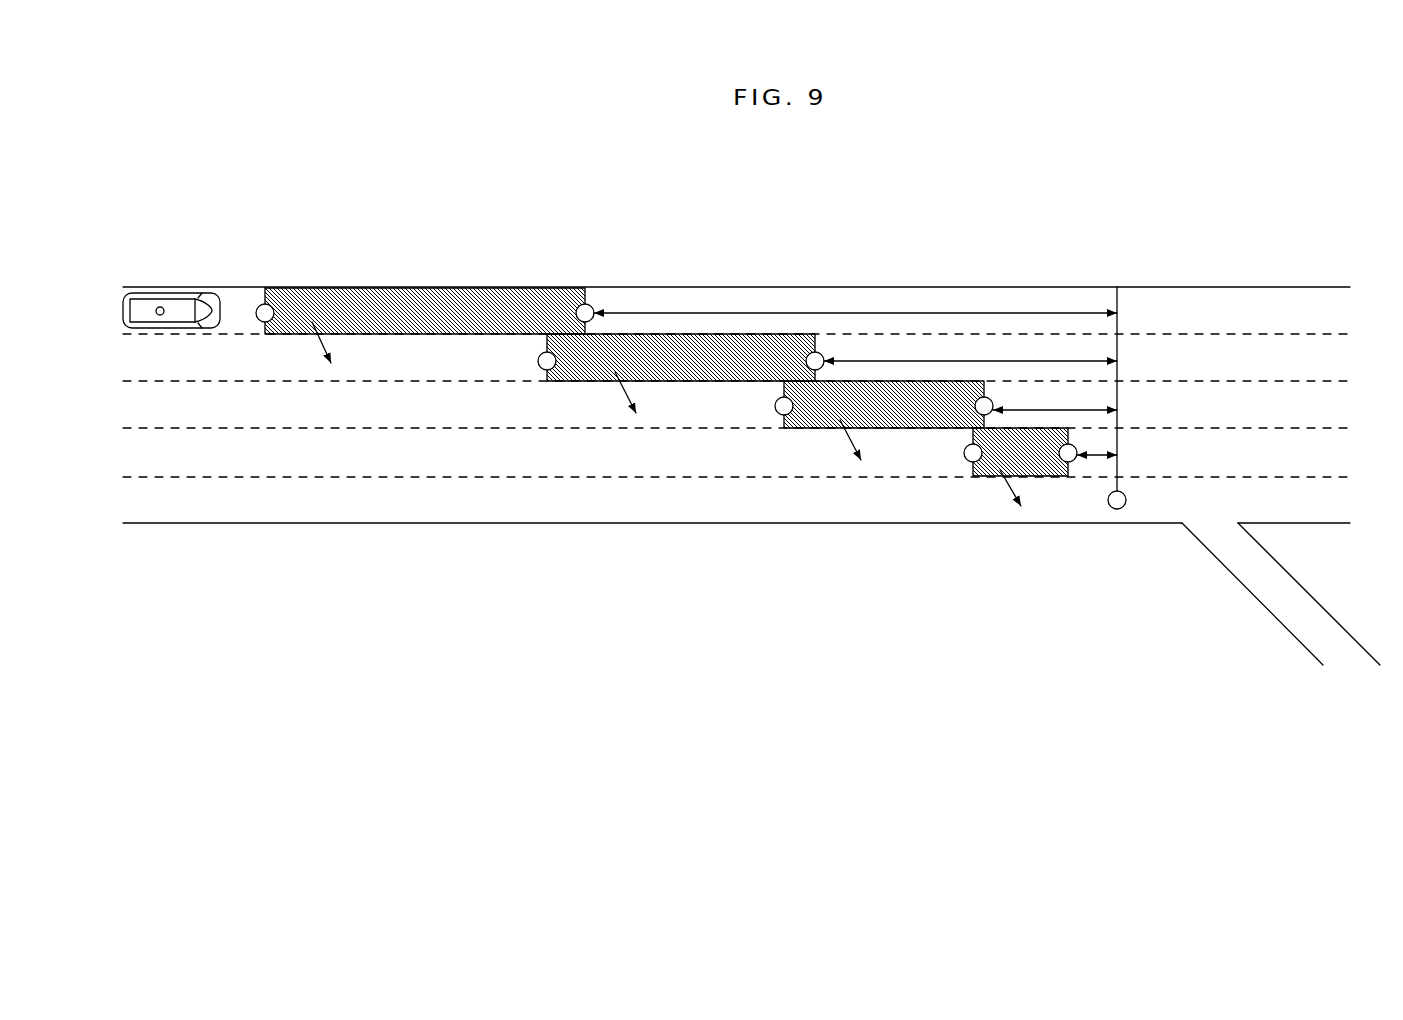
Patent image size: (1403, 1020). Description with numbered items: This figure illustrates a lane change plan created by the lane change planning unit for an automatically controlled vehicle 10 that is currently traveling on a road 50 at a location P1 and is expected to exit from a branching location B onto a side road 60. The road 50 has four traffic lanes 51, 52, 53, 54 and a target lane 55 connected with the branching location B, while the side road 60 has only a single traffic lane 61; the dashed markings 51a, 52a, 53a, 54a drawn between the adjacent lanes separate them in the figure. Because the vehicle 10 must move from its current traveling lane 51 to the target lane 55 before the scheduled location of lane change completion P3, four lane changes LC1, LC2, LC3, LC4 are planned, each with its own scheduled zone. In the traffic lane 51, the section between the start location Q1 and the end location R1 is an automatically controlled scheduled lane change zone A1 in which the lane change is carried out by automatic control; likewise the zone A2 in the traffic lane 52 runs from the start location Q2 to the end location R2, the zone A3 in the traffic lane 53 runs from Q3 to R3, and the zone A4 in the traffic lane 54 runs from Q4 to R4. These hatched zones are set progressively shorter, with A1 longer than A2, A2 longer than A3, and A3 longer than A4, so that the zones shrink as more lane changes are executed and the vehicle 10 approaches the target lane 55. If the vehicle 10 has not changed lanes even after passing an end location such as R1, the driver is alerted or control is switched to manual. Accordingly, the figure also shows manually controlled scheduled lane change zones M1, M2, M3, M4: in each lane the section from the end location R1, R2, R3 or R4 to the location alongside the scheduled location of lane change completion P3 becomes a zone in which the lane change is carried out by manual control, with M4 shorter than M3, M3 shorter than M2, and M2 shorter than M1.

The vehicle 10 is at (140, 293).
The current location P1 is at (160, 306).
The road 50 is at (916, 286).
The traffic lane 51 is at (1298, 322).
The traffic lane 52 is at (1298, 370).
The traffic lane 53 is at (1298, 415).
The traffic lane 54 is at (1298, 463).
The target lane 55 is at (1298, 510).
The lane marking between first and second lanes 51a is at (1373, 322).
The lane marking between second and third lanes 52a is at (1373, 369).
The lane marking between third and fourth lanes 53a is at (1373, 416).
The lane marking between fourth and fifth lanes 54a is at (1373, 465).
The automatically controlled scheduled lane change zone A1 is at (425, 311).
The automatically controlled scheduled lane change zone A2 is at (681, 357).
The automatically controlled scheduled lane change zone A3 is at (884, 404).
The automatically controlled scheduled lane change zone A4 is at (1020, 452).
The start location Q1 is at (247, 305).
The start location Q2 is at (528, 354).
The start location Q3 is at (764, 401).
The start location Q4 is at (953, 446).
The end location R1 is at (603, 305).
The end location R2 is at (835, 353).
The end location R3 is at (1004, 399).
The end location R4 is at (1069, 464).
The manually controlled scheduled lane change zone M1 is at (855, 300).
The manually controlled scheduled lane change zone M2 is at (970, 349).
The manually controlled scheduled lane change zone M3 is at (1055, 396).
The manually controlled scheduled lane change zone M4 is at (1095, 451).
The lane change LC1 is at (296, 346).
The lane change LC2 is at (600, 394).
The lane change LC3 is at (825, 442).
The lane change LC4 is at (986, 491).
The scheduled location of lane change completion P3 is at (1127, 499).
The branching location B is at (1180, 527).
The side road 60 is at (1232, 601).
The traffic lane 61 is at (1342, 648).